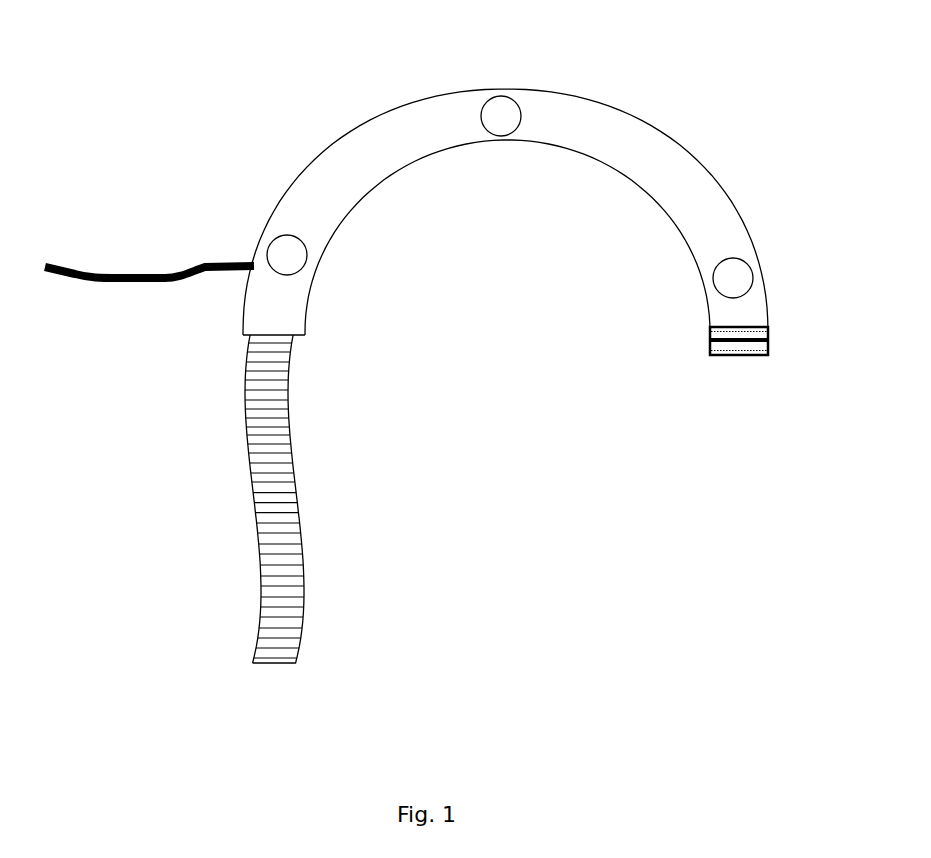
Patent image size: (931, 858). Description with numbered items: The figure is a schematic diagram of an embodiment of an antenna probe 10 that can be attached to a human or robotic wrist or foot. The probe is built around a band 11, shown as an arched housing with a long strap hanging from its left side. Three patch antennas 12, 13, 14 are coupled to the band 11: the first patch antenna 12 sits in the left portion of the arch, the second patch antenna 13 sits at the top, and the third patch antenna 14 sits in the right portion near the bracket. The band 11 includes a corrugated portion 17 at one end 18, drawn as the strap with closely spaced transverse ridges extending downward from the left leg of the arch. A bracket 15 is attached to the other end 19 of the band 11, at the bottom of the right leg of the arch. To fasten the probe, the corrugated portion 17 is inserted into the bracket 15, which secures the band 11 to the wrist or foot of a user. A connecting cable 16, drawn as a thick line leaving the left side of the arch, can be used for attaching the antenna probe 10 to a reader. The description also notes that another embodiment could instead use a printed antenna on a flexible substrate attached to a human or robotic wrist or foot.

The antenna probe 10 is at (59, 21).
The band 11 is at (292, 537).
The patch antenna 12 is at (293, 243).
The patch antenna 13 is at (522, 102).
The patch antenna 14 is at (745, 278).
The bracket 15 is at (770, 328).
The connecting cable 16 is at (131, 283).
The corrugated portion 17 is at (243, 433).
The end 18 is at (298, 338).
The other end 19 is at (710, 330).